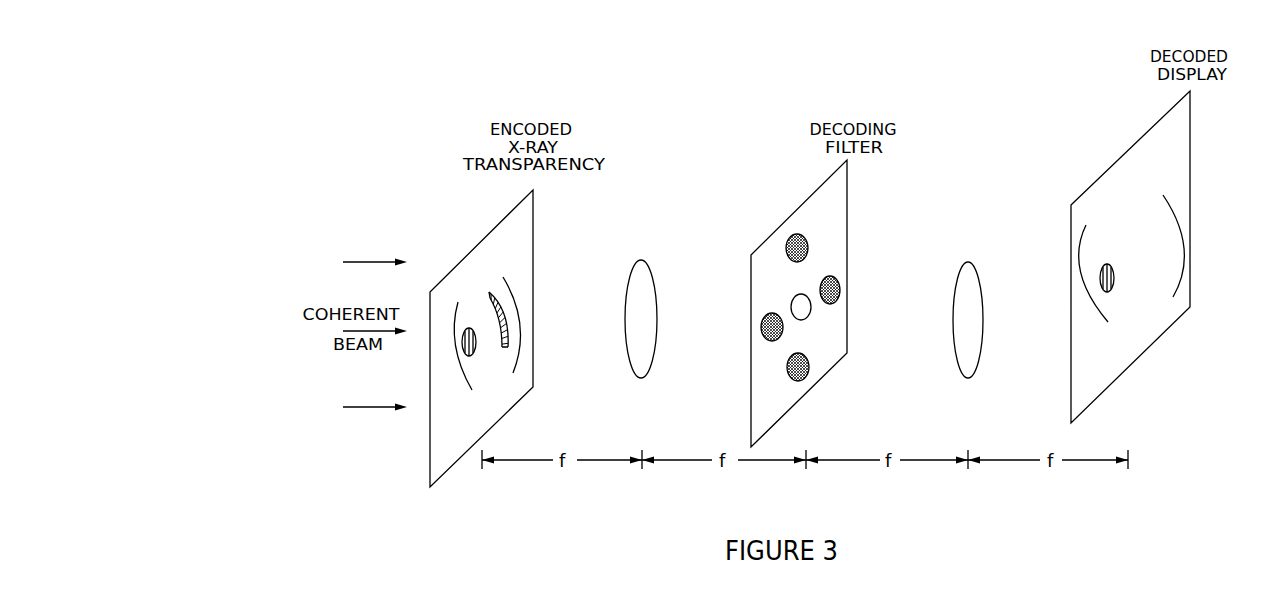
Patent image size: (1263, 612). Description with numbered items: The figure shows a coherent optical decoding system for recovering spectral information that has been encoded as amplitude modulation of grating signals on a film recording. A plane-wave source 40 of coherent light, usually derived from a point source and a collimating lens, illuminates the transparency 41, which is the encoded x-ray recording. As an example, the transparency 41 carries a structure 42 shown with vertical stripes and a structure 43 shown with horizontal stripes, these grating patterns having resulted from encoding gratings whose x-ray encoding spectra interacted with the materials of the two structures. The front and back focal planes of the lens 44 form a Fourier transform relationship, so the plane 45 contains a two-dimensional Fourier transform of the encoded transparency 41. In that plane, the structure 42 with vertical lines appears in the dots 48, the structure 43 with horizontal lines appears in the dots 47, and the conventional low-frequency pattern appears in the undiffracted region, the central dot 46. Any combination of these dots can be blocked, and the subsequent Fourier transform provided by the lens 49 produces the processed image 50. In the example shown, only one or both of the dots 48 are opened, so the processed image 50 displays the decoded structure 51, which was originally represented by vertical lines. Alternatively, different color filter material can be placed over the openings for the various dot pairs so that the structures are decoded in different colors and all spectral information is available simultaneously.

The plane-wave source 40 is at (375, 347).
The transparency 41 is at (453, 466).
The structure 42 is at (462, 343).
The structure 43 is at (508, 313).
The lens 44 is at (646, 375).
The plane 45 is at (818, 381).
The central dot 46 is at (812, 312).
The dots 47 is at (790, 238).
The dots 48 is at (841, 283).
The lens 49 is at (973, 375).
The processed image 50 is at (1120, 375).
The decoded structure 51 is at (1100, 272).